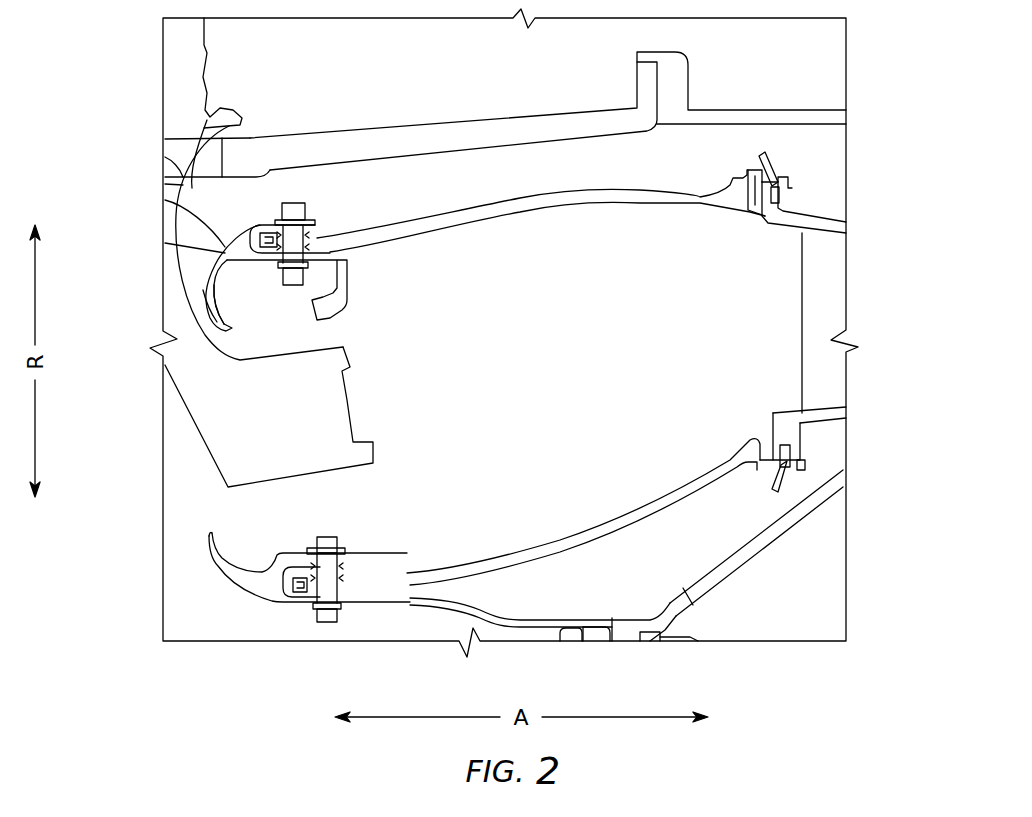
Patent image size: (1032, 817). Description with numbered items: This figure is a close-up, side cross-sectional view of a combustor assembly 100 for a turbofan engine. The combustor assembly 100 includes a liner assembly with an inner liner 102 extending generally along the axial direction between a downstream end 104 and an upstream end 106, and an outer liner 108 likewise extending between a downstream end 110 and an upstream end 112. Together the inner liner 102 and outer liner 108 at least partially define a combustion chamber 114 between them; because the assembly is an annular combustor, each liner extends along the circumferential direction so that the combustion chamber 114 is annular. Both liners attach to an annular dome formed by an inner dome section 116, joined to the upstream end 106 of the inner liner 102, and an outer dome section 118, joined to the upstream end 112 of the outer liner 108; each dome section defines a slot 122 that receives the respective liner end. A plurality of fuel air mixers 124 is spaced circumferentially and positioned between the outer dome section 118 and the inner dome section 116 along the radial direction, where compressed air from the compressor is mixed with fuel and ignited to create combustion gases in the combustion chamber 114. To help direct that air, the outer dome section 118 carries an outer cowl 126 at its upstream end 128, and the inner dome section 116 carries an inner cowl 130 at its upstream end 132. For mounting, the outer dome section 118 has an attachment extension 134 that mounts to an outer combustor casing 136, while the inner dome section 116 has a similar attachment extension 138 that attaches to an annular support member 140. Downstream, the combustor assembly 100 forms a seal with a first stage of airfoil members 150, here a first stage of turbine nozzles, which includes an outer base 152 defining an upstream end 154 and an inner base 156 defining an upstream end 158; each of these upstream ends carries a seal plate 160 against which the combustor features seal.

The combustor assembly 100 is at (542, 168).
The inner liner 102 is at (556, 540).
The downstream end of inner liner 104 is at (730, 437).
The upstream end of inner liner 106 is at (396, 600).
The outer liner 108 is at (583, 190).
The downstream end of outer liner 110 is at (723, 223).
The upstream end of outer liner 112 is at (336, 220).
The combustion chamber 114 is at (525, 360).
The inner dome section 116 is at (278, 600).
The outer dome section 118 is at (213, 248).
The slot 122 is at (358, 252).
The fuel air mixers 124 is at (256, 427).
The outer cowl 126 is at (227, 321).
The upstream end of outer dome section 128 is at (197, 287).
The inner cowl 130 is at (223, 577).
The upstream end of inner dome section 132 is at (200, 563).
The attachment extension 134 is at (167, 160).
The outer combustor casing 136 is at (373, 130).
The attachment extension 138 is at (527, 628).
The annular support member 140 is at (723, 570).
The first stage of airfoil members 150 is at (792, 303).
The outer base 152 is at (811, 203).
The upstream end of outer base 154 is at (782, 233).
The inner base 156 is at (817, 428).
The upstream end of inner base 158 is at (767, 420).
The seal plate 160 is at (768, 157).